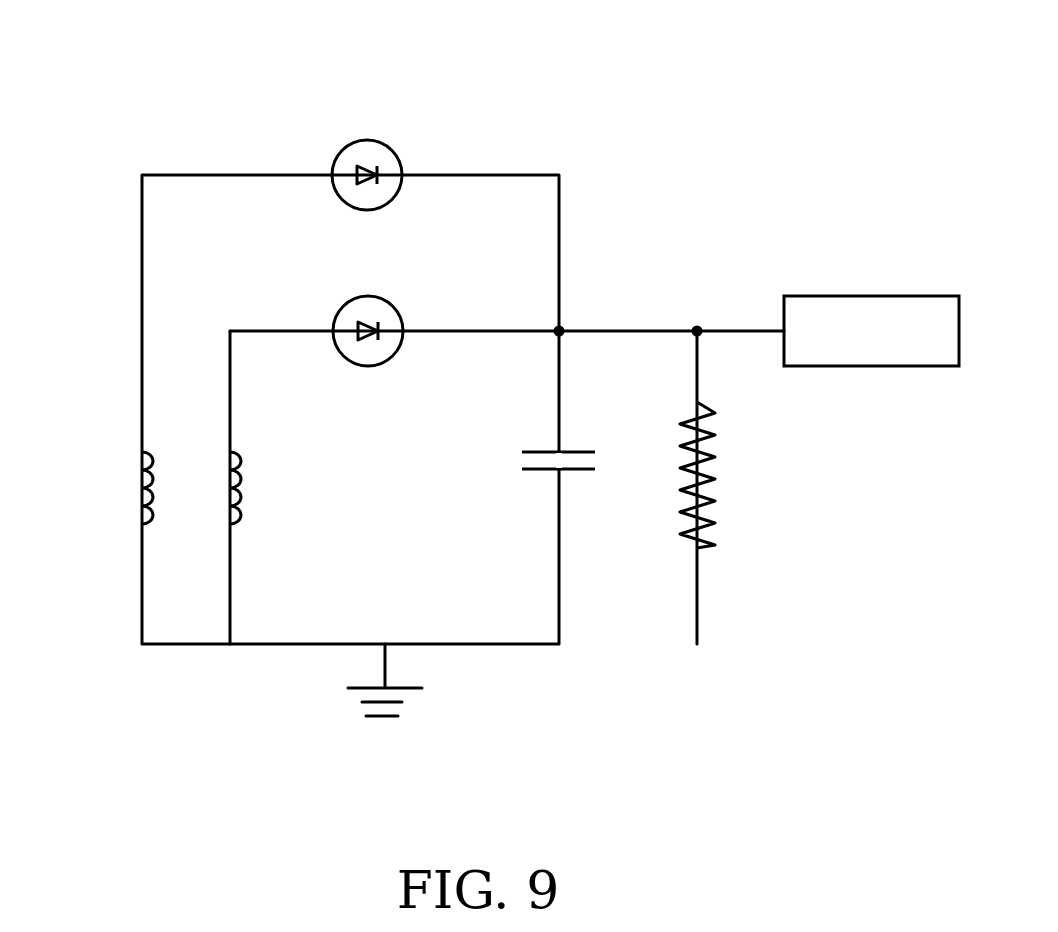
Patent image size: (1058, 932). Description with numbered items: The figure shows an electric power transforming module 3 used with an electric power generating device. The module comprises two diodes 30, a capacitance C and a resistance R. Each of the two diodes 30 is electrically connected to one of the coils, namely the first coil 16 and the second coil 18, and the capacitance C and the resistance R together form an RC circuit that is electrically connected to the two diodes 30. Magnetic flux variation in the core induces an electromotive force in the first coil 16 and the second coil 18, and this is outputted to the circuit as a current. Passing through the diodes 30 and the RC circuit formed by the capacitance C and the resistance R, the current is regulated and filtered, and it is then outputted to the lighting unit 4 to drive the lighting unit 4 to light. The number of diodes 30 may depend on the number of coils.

The electric power transforming module 3 is at (596, 107).
The lighting unit 4 is at (883, 296).
The first coil 16 is at (238, 480).
The second coil 18 is at (137, 484).
The diode 30 is at (368, 140).
The capacitance C is at (545, 472).
The resistance R is at (710, 462).